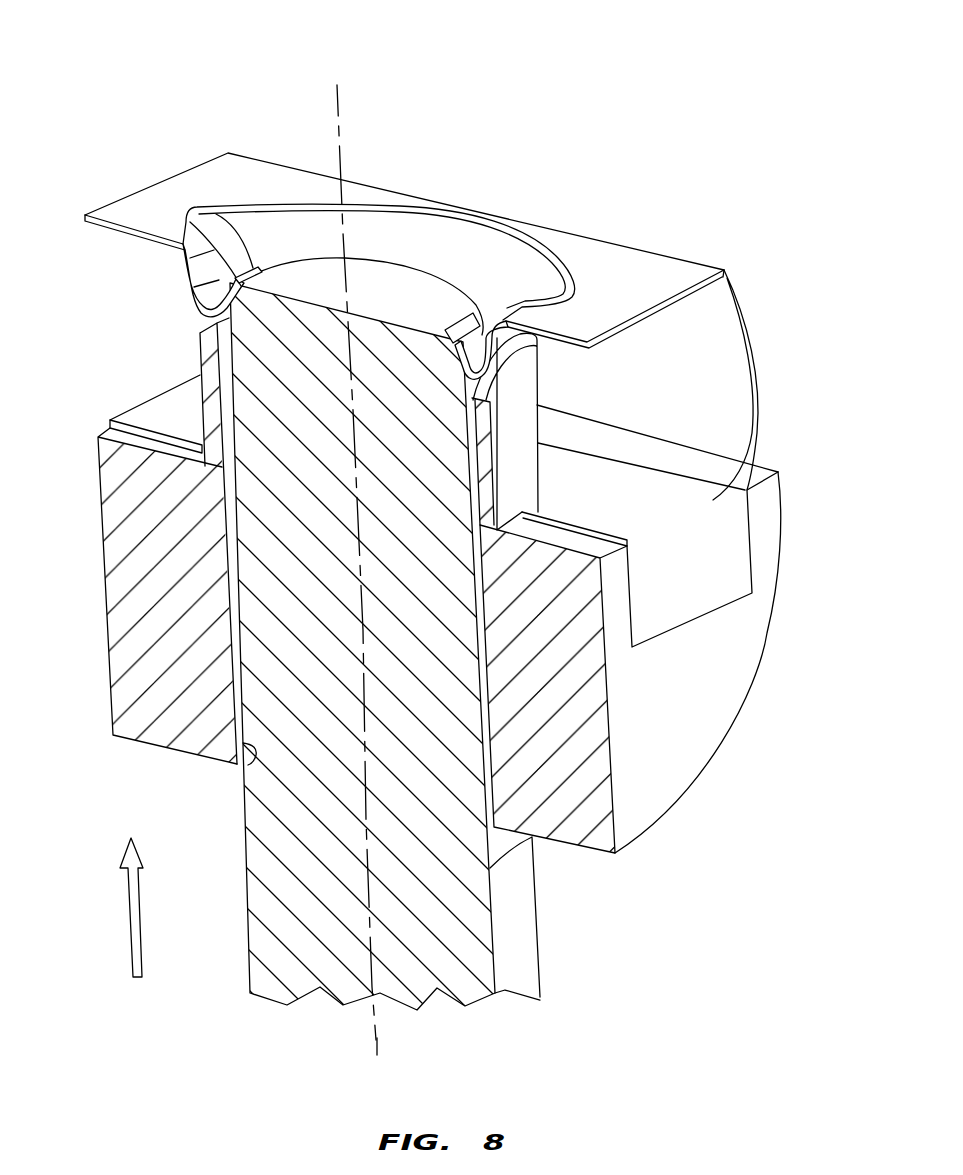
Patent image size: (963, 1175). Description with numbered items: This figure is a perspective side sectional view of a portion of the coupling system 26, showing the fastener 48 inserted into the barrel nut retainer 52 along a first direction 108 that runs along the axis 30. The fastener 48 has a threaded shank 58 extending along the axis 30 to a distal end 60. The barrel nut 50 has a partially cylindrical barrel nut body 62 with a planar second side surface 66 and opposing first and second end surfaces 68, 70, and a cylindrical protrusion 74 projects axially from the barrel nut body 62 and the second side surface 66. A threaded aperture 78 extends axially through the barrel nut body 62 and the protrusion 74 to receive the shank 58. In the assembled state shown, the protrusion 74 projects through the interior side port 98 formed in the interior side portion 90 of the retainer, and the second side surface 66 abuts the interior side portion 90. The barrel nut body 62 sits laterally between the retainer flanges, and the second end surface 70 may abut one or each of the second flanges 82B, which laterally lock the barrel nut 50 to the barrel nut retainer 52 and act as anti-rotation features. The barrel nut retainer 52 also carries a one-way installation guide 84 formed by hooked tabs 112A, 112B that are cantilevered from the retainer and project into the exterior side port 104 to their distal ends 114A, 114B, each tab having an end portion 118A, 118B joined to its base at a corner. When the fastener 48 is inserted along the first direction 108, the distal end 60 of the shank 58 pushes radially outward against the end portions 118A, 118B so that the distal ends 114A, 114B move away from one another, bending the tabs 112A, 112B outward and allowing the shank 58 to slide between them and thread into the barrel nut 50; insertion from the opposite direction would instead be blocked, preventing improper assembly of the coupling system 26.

The coupling system 26 is at (137, 92).
The axis 30 is at (378, 1047).
The fastener 48 is at (238, 1002).
The barrel nut 50 is at (798, 516).
The barrel nut retainer 52 is at (738, 267).
The shank 58 is at (549, 975).
The distal end 60 is at (374, 268).
The barrel nut body 62 is at (780, 646).
The second side surface 66 is at (120, 432).
The first end surface 68 is at (104, 607).
The second end surface 70 is at (713, 733).
The protrusion 74 is at (540, 394).
The threaded aperture 78 is at (247, 760).
The second flanges 82B is at (737, 558).
The one-way installation guide 84 is at (522, 294).
The interior side portion 90 is at (140, 437).
The interior side port 98 is at (558, 474).
The exterior side port 104 is at (448, 256).
The first direction 108 is at (130, 943).
The first tab 112A is at (238, 312).
The second tab 112B is at (447, 372).
The distal end of first tab 114A is at (220, 222).
The distal end of second tab 114B is at (465, 298).
The end portion of first tab 118A is at (258, 276).
The end portion of second tab 118B is at (447, 336).